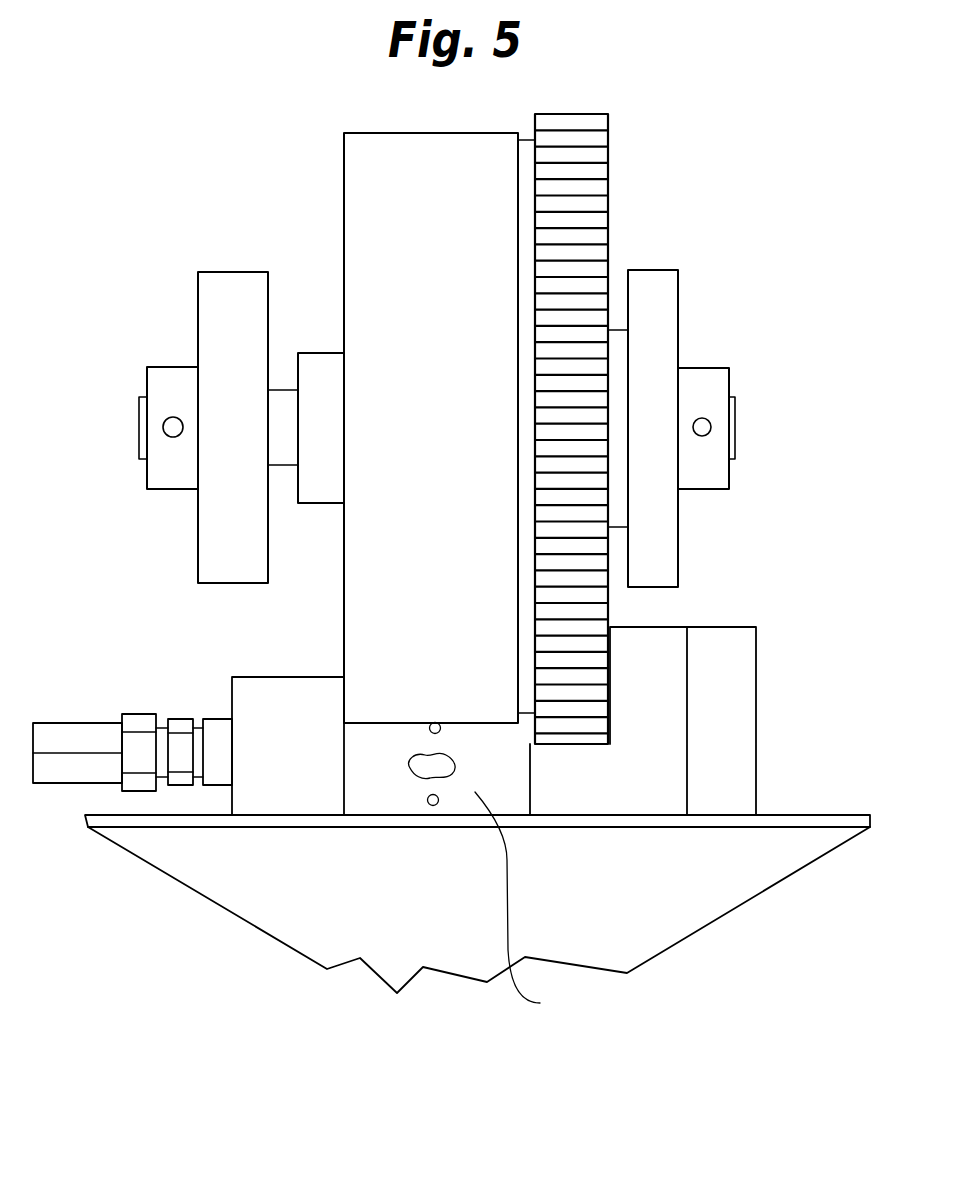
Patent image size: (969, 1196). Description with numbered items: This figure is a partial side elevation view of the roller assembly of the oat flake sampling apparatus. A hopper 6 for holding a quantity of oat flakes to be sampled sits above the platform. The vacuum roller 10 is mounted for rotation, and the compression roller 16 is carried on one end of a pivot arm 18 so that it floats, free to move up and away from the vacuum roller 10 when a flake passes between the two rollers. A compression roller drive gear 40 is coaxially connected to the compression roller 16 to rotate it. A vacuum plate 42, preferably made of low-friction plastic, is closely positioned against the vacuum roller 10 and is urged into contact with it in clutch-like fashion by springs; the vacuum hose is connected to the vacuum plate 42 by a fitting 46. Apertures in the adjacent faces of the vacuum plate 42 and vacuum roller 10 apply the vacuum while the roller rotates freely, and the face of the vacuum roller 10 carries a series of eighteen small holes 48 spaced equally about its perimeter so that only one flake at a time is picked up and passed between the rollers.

The hopper 6 is at (675, 910).
The vacuum roller 10 is at (524, 904).
The compression roller 16 is at (355, 173).
The pivot arm 18 is at (215, 310).
The compression roller drive gear 40 is at (575, 183).
The vacuum plate 42 is at (252, 698).
The fitting 46 is at (137, 720).
The holes 48 is at (429, 732).